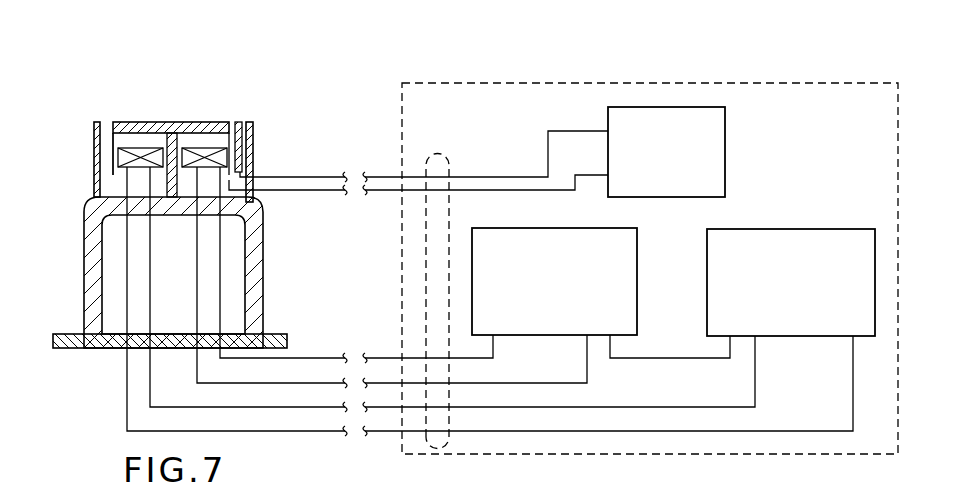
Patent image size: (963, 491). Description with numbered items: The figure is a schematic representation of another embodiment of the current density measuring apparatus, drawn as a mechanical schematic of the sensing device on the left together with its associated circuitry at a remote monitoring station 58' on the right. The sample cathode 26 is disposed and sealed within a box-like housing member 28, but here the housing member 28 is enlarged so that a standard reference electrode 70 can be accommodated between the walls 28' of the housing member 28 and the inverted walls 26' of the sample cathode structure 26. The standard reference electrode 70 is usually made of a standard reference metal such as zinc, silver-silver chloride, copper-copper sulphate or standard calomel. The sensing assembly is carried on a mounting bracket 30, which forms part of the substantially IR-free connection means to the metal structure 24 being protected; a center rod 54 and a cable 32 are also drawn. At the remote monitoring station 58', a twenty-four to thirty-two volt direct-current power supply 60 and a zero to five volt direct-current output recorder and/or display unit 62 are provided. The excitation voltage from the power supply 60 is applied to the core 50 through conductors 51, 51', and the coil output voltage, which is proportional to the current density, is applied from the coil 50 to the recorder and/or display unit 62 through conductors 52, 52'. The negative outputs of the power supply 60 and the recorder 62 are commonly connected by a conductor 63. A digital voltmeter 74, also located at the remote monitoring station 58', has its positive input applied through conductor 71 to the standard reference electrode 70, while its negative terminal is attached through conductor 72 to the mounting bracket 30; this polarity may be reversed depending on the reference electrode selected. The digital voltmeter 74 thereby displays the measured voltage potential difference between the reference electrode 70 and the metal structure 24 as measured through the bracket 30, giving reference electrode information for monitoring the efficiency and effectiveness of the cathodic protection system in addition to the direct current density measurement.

The metal structure 24 is at (78, 348).
The sample cathode 26 is at (171, 114).
The inverted walls 26' is at (134, 119).
The box-like housing member 28 is at (270, 131).
The walls 28' is at (177, 141).
The mounting bracket 30 is at (85, 247).
The cable 32 is at (450, 160).
The core 50 is at (120, 157).
The conductor 51 is at (392, 277).
The conductor 51' is at (356, 265).
The conductor 52 is at (450, 301).
The conductor 52' is at (452, 289).
The center rod 54 is at (170, 188).
The remote monitoring station 58' is at (650, 233).
The power supply 60 is at (637, 258).
The output recorder and/or display unit 62 is at (826, 229).
The conductor 63 is at (674, 358).
The standard reference electrode 70 is at (239, 122).
The conductor 71 is at (318, 177).
The conductor 72 is at (330, 192).
The digital voltmeter 74 is at (665, 105).